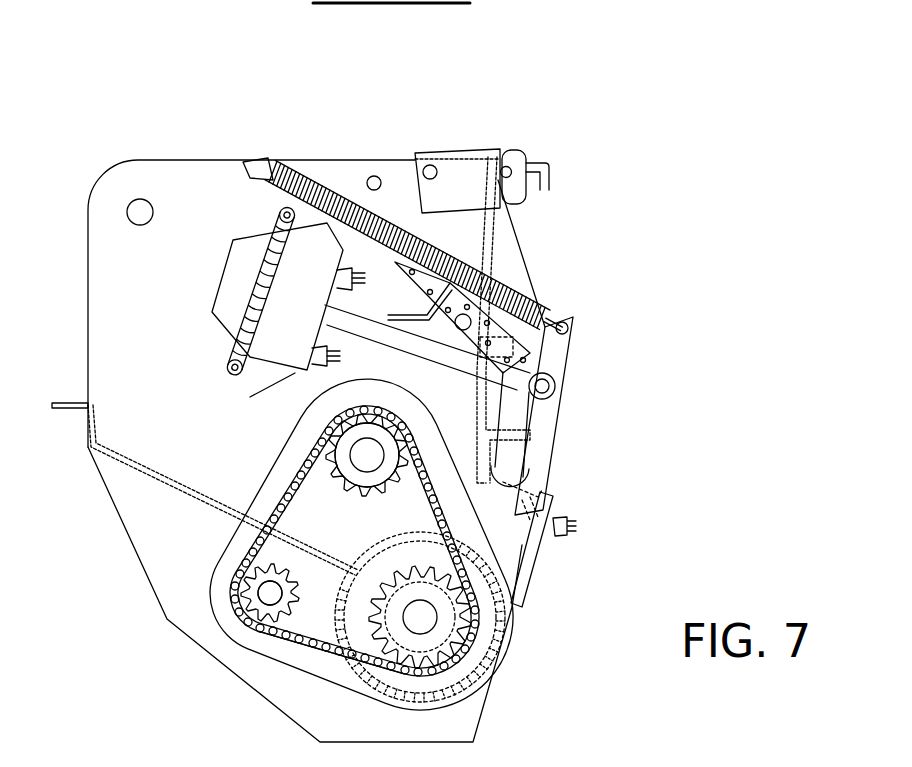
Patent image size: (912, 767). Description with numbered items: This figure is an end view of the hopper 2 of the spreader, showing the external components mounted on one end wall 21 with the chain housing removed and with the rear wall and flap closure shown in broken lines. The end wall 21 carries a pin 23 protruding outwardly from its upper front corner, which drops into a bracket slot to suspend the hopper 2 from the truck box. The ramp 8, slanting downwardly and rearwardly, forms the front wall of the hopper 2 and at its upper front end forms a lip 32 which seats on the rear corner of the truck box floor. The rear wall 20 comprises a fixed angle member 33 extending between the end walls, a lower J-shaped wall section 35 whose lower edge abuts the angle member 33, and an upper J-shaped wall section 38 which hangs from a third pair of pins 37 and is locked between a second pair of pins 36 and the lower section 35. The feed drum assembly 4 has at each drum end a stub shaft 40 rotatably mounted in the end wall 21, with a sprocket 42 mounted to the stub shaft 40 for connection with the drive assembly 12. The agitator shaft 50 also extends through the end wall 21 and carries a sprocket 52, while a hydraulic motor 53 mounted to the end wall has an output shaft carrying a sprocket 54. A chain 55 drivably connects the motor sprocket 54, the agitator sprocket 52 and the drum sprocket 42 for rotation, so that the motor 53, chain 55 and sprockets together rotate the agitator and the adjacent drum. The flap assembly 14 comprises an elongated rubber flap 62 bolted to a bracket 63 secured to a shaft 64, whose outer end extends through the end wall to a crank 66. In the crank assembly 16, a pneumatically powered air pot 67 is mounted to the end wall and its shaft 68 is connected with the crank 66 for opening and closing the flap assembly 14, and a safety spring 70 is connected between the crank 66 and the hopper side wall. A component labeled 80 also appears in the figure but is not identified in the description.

The hopper 2 is at (163, 667).
The feed drum assembly 4 is at (500, 618).
The ramp 8 is at (153, 470).
The drive assembly 12 is at (483, 652).
The flap assembly 14 is at (581, 539).
The crank assembly 16 is at (592, 320).
The rear wall 20 is at (497, 128).
The end wall 21 is at (88, 357).
The pin 23 is at (127, 212).
The lip 32 is at (60, 410).
The fixed angle member 33 is at (498, 437).
The lower J-shaped wall section 35 is at (483, 401).
The pins 36 is at (430, 312).
The pins 37 is at (506, 160).
The upper J-shaped wall section 38 is at (492, 236).
The stub shaft 40 is at (420, 622).
The sprocket 42 is at (352, 697).
The shaft 50 is at (363, 447).
The sprocket 52 is at (318, 493).
The hydraulic motor 53 is at (267, 593).
The sprocket 54 is at (262, 552).
The chain 55 is at (273, 655).
The rubber flap 62 is at (540, 562).
The bracket 63 is at (533, 487).
The shaft 64 is at (530, 470).
The crank 66 is at (567, 350).
The air pot 67 is at (220, 290).
The shaft 68 is at (400, 342).
The safety spring 70 is at (518, 292).
The tension spring 80 is at (500, 150).